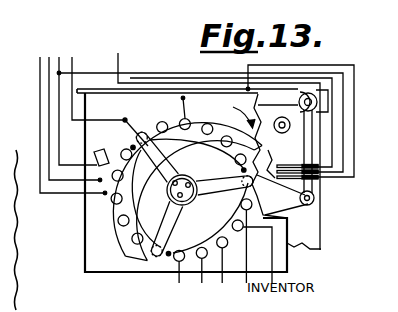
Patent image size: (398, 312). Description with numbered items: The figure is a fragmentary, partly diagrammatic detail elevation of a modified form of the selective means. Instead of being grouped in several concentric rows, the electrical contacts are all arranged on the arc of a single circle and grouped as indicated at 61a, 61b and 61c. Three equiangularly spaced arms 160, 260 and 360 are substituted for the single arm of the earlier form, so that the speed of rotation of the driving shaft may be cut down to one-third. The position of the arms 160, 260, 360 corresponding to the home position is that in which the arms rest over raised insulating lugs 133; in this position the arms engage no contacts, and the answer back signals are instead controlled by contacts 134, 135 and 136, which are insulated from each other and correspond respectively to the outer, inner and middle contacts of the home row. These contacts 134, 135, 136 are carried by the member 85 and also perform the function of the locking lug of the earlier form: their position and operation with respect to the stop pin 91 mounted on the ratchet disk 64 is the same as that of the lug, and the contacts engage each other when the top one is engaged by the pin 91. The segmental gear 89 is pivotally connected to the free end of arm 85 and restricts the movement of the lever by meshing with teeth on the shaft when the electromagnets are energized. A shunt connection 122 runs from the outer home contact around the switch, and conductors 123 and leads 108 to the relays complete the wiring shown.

The conductor 123 is at (118, 62).
The shunt connection 122 is at (354, 72).
The raised insulating lugs 133 is at (133, 147).
The contacts group 61a is at (146, 198).
The contacts group 61b is at (196, 153).
The contacts group 61c is at (210, 218).
The arm 160 is at (158, 157).
The arm 260 is at (224, 185).
The arm 360 is at (166, 228).
The ratchet disk 64 is at (284, 134).
The stop pin 91 is at (286, 171).
The segmental gear 89 is at (285, 195).
The arm 85 is at (308, 152).
The contact 134 is at (318, 167).
The contact 135 is at (318, 172).
The contact 136 is at (318, 178).
The relay leads 108 is at (221, 256).